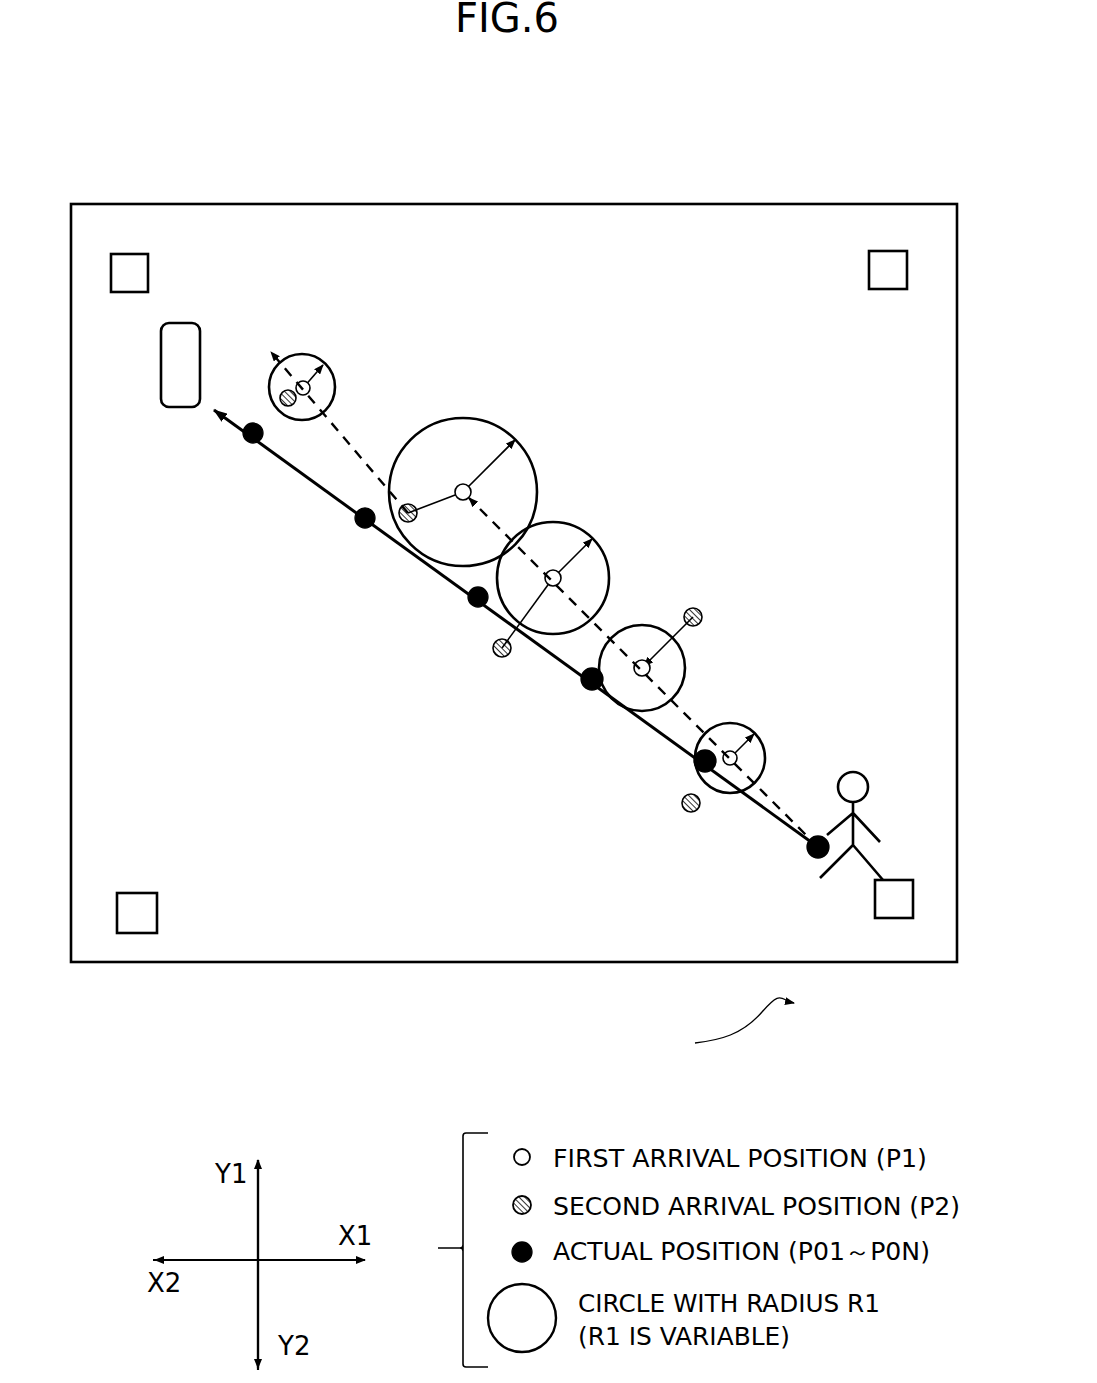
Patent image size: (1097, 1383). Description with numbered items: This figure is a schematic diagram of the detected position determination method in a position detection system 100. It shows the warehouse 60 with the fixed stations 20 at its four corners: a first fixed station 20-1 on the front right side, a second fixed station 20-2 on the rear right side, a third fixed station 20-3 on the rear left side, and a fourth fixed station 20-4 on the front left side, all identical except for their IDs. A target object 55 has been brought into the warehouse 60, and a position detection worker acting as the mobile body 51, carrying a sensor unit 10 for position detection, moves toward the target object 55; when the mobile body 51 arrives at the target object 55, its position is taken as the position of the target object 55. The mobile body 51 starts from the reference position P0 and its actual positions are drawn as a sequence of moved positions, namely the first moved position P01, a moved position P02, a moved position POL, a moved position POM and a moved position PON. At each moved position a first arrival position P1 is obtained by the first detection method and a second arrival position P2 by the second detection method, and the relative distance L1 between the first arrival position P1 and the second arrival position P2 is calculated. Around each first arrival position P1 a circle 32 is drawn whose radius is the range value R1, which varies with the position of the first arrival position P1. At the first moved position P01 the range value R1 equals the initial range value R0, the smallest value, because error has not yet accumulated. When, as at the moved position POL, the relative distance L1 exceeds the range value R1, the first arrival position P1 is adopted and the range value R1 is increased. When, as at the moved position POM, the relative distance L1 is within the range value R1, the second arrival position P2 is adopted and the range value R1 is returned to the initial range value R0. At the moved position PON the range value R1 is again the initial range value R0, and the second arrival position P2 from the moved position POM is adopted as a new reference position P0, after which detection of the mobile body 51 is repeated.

The position estimation system 100 is at (514, 520).
The warehouse 60 is at (507, 238).
The fixed stations 20 is at (724, 1027).
The first fixed station 20-1 is at (888, 897).
The second fixed station 20-2 is at (882, 265).
The third fixed station 20-3 is at (138, 265).
The fourth fixed station 20-4 is at (138, 918).
The target object 55 is at (178, 388).
The mobile body 51 is at (871, 776).
The sensor unit 10 is at (808, 855).
The circle 32 is at (460, 417).
The range value R1 is at (538, 455).
The initial range value R0 is at (303, 372).
The relative distance L1 is at (395, 502).
The first arrival position P1 is at (563, 582).
The second arrival position P2 is at (403, 517).
The reference position P0 is at (808, 853).
The first moved position P01 is at (695, 766).
The moved position P02 is at (583, 690).
The moved position POL is at (472, 606).
The moved position POM is at (363, 530).
The moved position PON is at (252, 445).